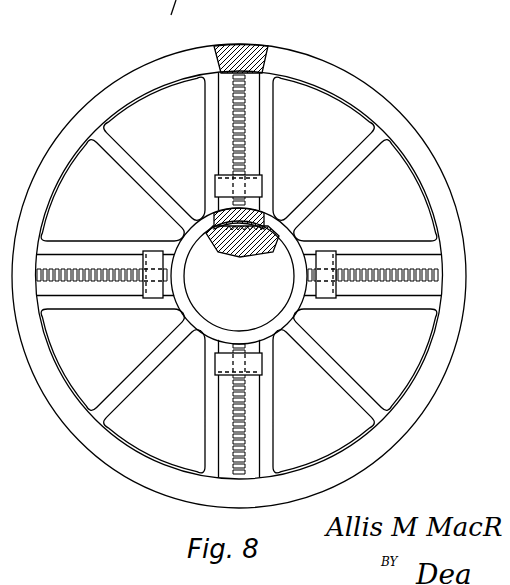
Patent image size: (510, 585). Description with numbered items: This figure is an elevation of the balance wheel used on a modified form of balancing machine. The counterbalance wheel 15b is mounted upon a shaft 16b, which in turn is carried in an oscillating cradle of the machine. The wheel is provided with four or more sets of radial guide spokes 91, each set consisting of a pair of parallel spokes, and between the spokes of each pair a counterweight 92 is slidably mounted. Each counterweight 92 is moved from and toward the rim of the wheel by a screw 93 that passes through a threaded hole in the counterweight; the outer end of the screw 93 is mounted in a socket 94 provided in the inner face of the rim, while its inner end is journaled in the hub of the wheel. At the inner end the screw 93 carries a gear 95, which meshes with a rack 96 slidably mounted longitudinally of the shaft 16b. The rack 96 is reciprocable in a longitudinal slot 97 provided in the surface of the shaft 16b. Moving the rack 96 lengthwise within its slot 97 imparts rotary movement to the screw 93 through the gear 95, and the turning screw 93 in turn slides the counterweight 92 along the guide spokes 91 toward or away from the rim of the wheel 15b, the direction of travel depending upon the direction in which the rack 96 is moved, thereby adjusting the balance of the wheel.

The counterbalance wheel 15b is at (423, 148).
The shaft 16b is at (274, 298).
The radial guide spokes 91 is at (204, 128).
The counterweight 92 is at (263, 186).
The screw 93 is at (246, 121).
The socket 94 is at (258, 46).
The gear 95 is at (222, 257).
The rack 96 is at (260, 226).
The longitudinal slot 97 is at (277, 232).